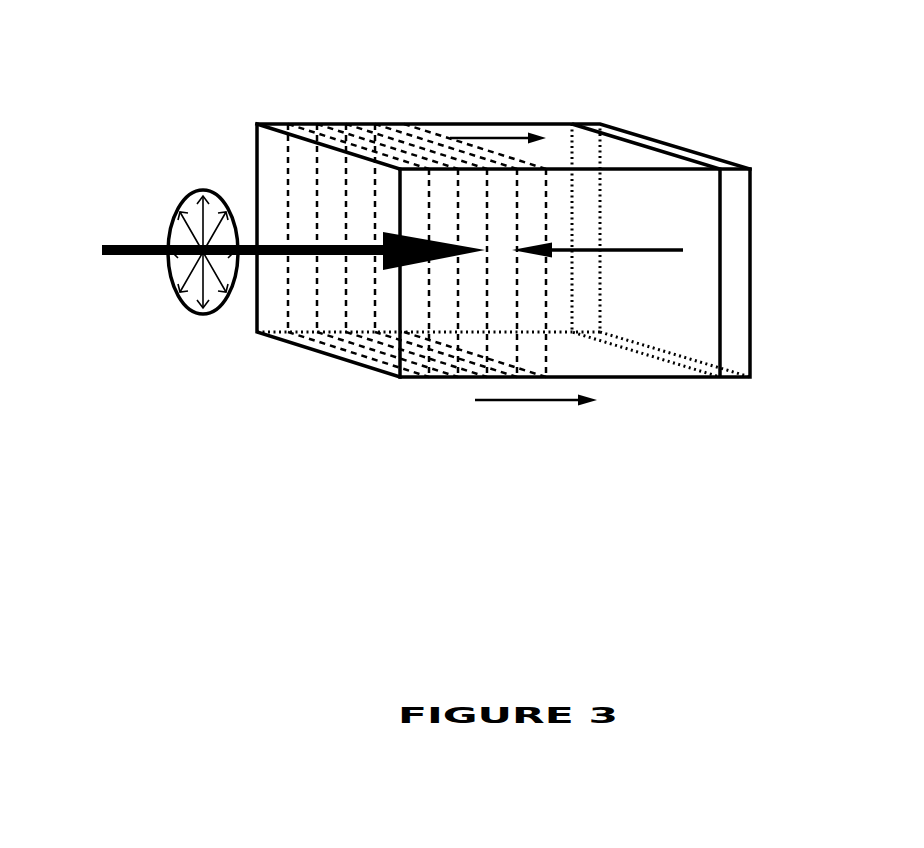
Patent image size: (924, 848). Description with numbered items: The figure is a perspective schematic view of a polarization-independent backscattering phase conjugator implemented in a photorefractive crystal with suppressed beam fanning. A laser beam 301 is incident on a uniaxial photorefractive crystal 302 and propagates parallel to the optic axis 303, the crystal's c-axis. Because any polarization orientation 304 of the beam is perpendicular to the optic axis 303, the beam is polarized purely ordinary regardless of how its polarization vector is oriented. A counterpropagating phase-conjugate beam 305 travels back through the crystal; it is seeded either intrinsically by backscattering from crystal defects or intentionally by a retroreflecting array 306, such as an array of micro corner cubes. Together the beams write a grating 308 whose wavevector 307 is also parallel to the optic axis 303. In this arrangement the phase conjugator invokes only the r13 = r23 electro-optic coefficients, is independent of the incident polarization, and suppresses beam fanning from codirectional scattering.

The laser beam 301 is at (120, 257).
The uniaxial photorefractive crystal 302 is at (653, 378).
The optic axis 303 is at (528, 400).
The polarization orientation 304 is at (185, 202).
The counterpropagating phase-conjugate beam 305 is at (560, 250).
The retroreflecting array 306 is at (750, 360).
The wavevector 307 is at (488, 133).
The grating 308 is at (425, 140).